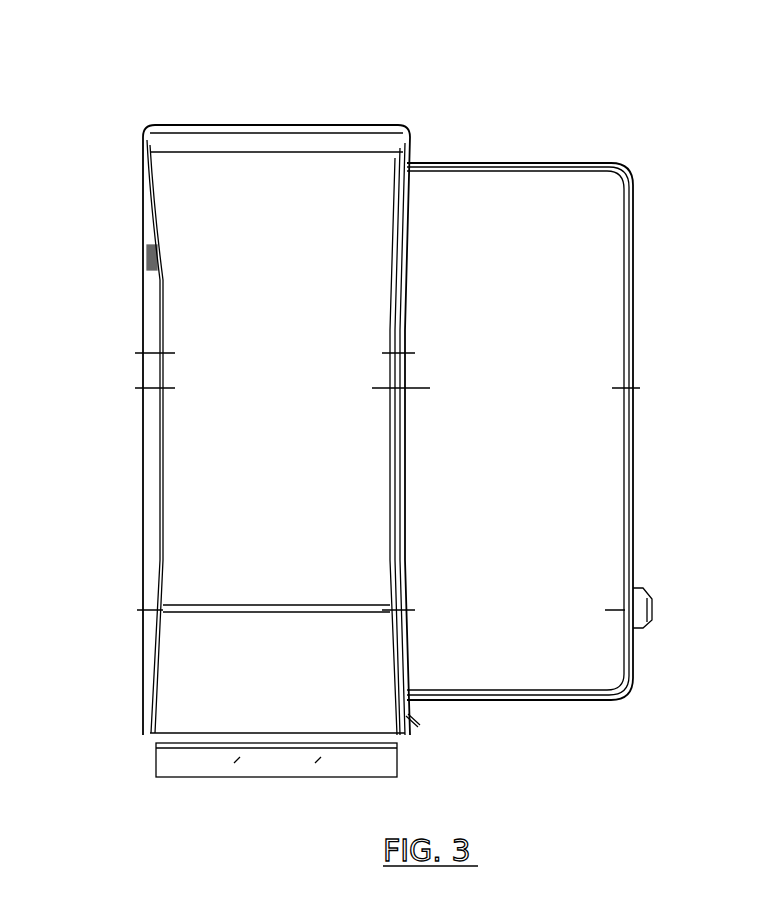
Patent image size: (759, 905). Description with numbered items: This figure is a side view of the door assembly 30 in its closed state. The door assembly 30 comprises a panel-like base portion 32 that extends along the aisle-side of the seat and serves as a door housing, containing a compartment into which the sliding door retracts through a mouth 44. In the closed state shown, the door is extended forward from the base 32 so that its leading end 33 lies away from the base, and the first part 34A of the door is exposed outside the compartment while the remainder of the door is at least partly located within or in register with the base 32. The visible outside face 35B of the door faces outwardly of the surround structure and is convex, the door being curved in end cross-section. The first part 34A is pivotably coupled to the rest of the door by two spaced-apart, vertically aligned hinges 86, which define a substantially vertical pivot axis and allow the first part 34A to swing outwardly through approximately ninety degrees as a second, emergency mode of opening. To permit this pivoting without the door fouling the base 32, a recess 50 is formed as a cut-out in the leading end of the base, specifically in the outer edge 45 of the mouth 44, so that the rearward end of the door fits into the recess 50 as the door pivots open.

The door assembly 30 is at (641, 107).
The base portion 32 is at (203, 140).
The leading end of the door 33 is at (633, 222).
The first part of the door 34A is at (603, 272).
The outside face 35B is at (540, 497).
The mouth 44 is at (412, 722).
The edge of the mouth 45 is at (390, 417).
The recess 50 is at (395, 305).
The hinge 86 is at (400, 383).